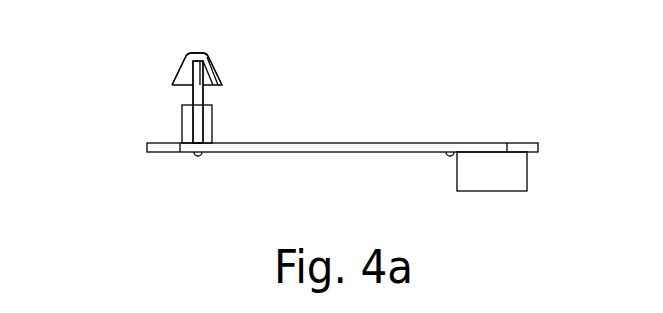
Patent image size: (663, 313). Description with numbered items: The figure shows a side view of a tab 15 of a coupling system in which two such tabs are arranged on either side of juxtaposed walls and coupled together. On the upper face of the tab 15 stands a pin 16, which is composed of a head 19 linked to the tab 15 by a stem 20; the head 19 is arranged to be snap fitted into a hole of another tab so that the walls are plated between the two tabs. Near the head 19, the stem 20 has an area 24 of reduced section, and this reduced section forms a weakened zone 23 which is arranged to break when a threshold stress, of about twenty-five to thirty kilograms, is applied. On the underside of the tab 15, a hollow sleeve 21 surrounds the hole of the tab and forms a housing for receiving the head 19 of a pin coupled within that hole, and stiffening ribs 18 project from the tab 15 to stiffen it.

The tab 15 is at (527, 93).
The pin 16 is at (178, 72).
The head 19 is at (197, 69).
The stem 20 is at (183, 125).
The weakened zone 23 is at (204, 96).
The area of reduced section 24 is at (198, 102).
The stiffening rib 18 is at (198, 158).
The hollow sleeve 21 is at (518, 172).